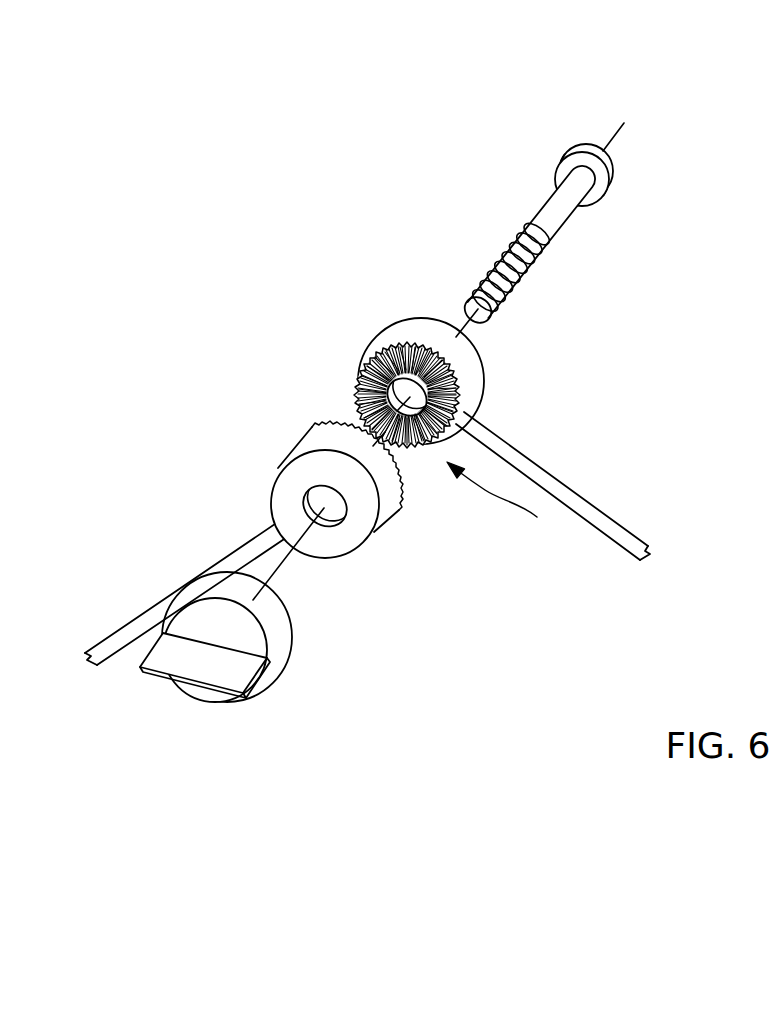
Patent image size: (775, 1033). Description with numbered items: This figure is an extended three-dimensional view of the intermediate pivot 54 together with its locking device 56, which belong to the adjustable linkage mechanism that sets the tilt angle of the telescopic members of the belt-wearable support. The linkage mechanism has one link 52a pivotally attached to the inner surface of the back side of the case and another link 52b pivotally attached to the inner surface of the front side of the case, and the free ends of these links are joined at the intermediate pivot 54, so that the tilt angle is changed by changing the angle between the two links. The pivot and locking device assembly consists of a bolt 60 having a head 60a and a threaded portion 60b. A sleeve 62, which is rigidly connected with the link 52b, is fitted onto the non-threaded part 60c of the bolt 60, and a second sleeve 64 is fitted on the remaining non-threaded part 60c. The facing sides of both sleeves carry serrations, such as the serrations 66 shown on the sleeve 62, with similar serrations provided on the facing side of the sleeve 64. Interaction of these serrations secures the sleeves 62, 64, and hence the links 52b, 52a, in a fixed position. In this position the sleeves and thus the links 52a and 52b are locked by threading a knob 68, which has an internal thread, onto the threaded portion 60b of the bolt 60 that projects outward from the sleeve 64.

The link 52a is at (262, 530).
The link 52b is at (558, 477).
The intermediate pivot 54 is at (512, 507).
The locking device 56 is at (409, 246).
The bolt 60 is at (546, 205).
The head 60a is at (609, 158).
The threaded portion 60b is at (530, 270).
The non-threaded part 60c is at (565, 205).
The sleeve 62 is at (465, 382).
The sleeve 64 is at (380, 507).
The serrations 66 is at (363, 352).
The knob 68 is at (220, 660).